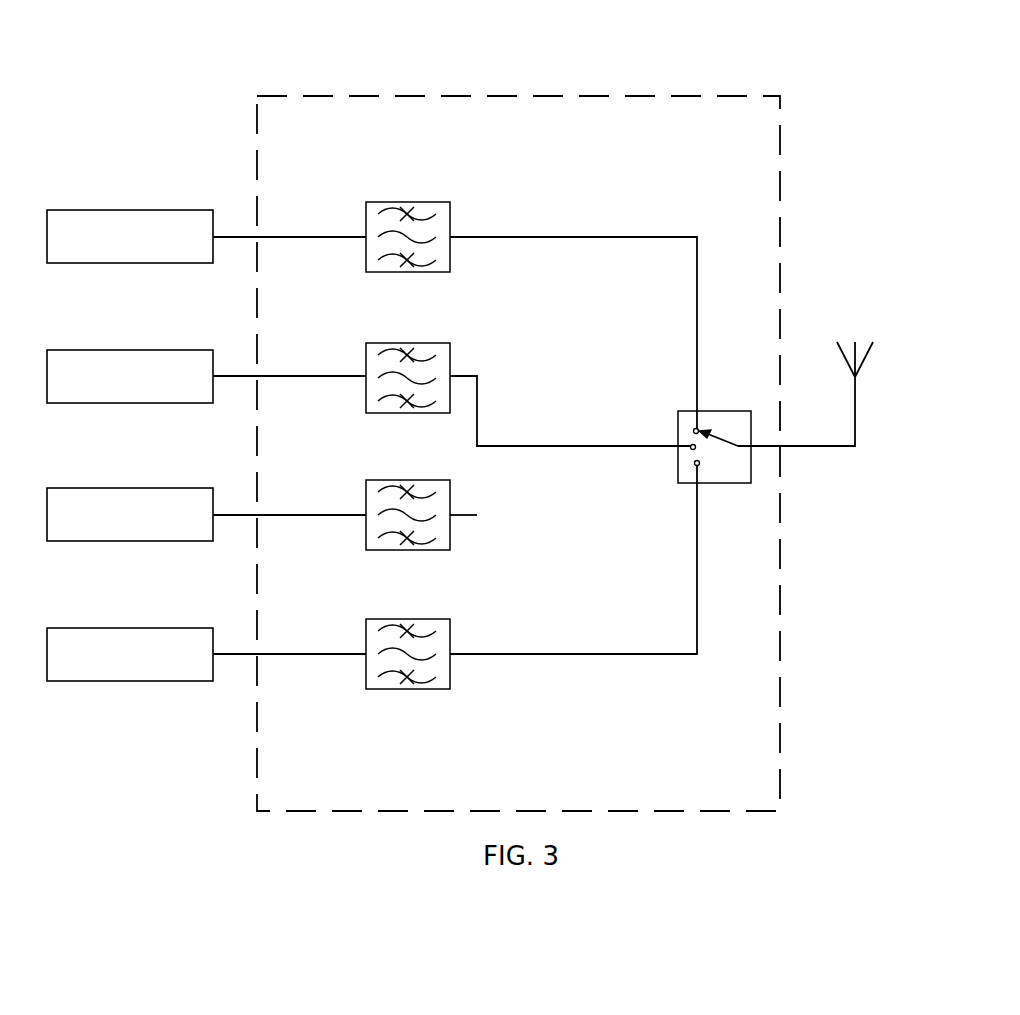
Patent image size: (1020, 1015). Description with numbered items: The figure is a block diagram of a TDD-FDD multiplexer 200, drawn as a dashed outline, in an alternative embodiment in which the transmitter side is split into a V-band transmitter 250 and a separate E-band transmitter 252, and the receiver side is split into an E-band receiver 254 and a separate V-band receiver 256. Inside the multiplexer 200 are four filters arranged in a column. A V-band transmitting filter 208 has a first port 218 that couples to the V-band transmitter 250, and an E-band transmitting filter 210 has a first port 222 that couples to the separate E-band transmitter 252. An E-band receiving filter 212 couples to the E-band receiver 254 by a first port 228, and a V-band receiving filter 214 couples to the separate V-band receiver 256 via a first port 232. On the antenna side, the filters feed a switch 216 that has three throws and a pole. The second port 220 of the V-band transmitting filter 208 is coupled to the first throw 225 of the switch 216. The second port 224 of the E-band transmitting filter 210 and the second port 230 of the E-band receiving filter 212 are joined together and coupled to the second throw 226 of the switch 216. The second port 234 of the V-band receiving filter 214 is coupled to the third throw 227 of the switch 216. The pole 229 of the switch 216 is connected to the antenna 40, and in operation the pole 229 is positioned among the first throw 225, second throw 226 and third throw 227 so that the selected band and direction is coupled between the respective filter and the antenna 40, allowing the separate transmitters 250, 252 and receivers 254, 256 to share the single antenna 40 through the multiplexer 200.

The TDD-FDD multiplexer 200 is at (357, 96).
The V-band transmitting filter 208 is at (374, 207).
The E-band transmitting filter 210 is at (374, 348).
The E-band receiving filter 212 is at (374, 485).
The V-band receiving filter 214 is at (374, 623).
The switch 216 is at (690, 436).
The first port 218 is at (347, 236).
The second port 220 is at (466, 236).
The first port 222 is at (347, 377).
The second port 224 is at (466, 376).
The first throw 225 is at (695, 426).
The second throw 226 is at (690, 452).
The third throw 227 is at (696, 468).
The first port 228 is at (347, 515).
The pole 229 is at (720, 437).
The second port 230 is at (463, 518).
The first port 232 is at (346, 656).
The second port 234 is at (455, 656).
The antenna 40 is at (851, 325).
The V-band transmitter 250 is at (130, 236).
The E-band transmitter 252 is at (130, 376).
The E-band receiver 254 is at (130, 514).
The V-band receiver 256 is at (130, 654).